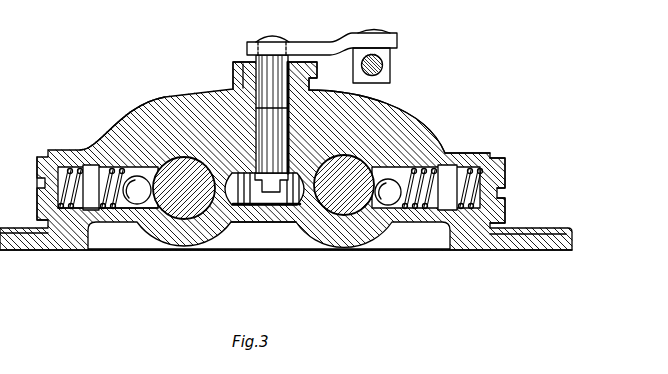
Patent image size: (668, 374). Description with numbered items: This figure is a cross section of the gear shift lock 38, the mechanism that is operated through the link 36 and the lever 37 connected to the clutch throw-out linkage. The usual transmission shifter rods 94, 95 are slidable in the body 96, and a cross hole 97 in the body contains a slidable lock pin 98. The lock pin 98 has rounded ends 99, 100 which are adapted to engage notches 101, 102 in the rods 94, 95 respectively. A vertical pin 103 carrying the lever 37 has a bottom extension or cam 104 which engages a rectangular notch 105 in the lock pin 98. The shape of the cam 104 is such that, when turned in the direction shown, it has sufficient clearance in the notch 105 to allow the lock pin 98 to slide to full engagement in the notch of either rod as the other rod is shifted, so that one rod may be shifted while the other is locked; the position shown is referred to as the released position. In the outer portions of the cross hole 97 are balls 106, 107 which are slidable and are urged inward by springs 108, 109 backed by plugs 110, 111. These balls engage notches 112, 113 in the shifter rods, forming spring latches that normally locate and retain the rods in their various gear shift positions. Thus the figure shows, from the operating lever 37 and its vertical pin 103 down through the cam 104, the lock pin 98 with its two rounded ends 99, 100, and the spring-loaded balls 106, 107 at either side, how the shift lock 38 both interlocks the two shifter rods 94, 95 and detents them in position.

The link 36 is at (383, 64).
The lever 37 is at (334, 47).
The gear shift lock 38 is at (172, 100).
The transmission shifter rod 94 is at (163, 156).
The transmission shifter rod 95 is at (417, 124).
The body 96 is at (163, 115).
The cross hole 97 is at (307, 228).
The lock pin 98 is at (226, 205).
The rounded end 99 is at (199, 212).
The rounded end 100 is at (297, 212).
The notch 101 is at (163, 212).
The notch 102 is at (324, 228).
The vertical pin 103 is at (263, 131).
The cam 104 is at (256, 192).
The rectangular notch 105 is at (245, 226).
The ball 106 is at (115, 213).
The ball 107 is at (440, 151).
The spring 108 is at (58, 240).
The spring 109 is at (470, 188).
The plug 110 is at (40, 202).
The plug 111 is at (495, 204).
The notch 112 is at (137, 193).
The notch 113 is at (368, 213).